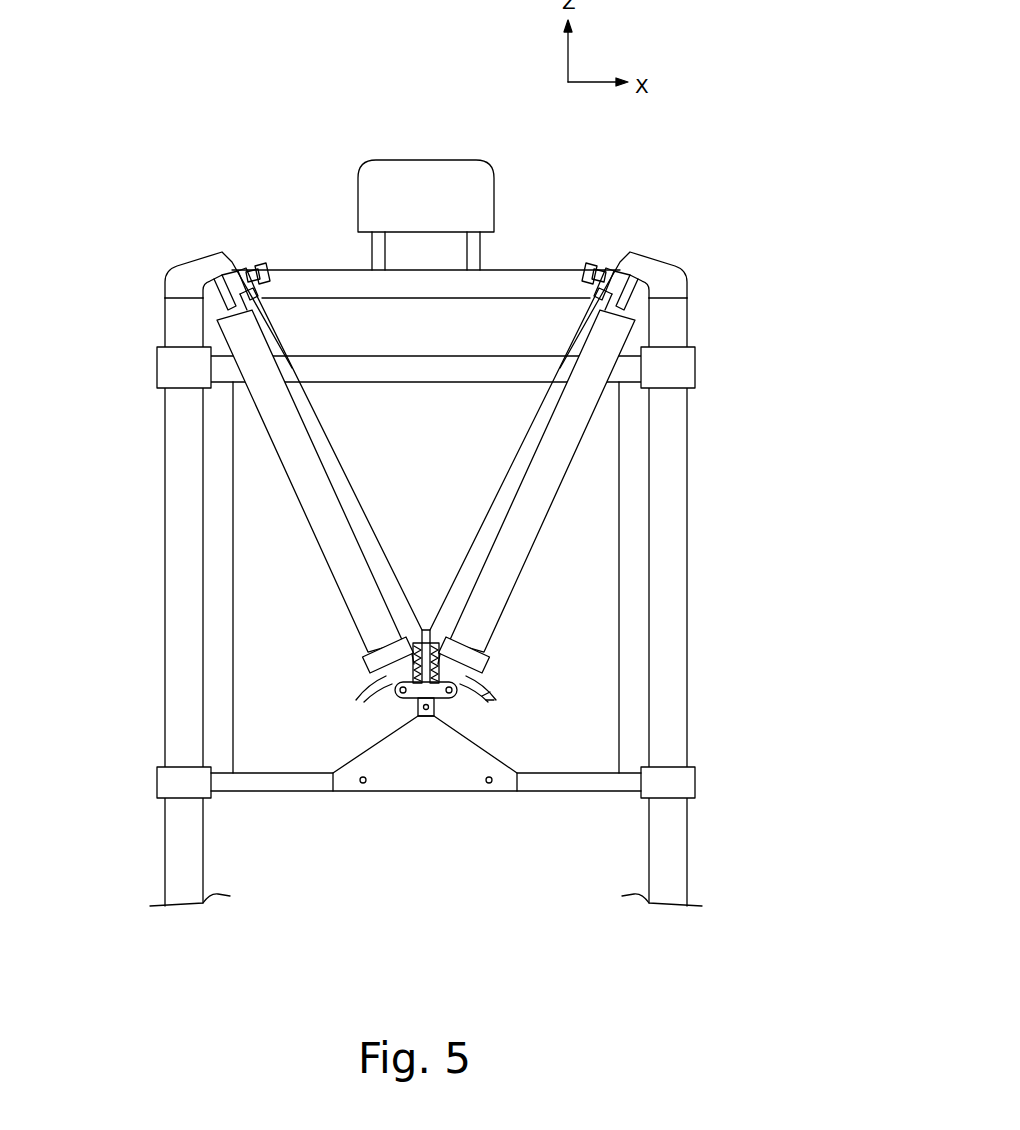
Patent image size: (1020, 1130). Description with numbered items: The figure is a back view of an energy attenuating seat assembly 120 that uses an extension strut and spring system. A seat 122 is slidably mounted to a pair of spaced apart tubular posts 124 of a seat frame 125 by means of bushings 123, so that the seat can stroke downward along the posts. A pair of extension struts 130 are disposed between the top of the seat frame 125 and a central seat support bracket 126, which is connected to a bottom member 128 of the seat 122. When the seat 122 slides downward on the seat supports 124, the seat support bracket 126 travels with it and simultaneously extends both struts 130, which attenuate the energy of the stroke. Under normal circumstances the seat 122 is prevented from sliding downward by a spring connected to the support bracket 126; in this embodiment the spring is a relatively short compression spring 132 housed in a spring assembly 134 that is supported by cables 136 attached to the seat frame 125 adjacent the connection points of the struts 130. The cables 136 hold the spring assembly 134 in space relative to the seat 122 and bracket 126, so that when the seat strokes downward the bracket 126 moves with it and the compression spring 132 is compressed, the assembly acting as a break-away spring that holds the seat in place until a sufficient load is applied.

The EA seat assembly 120 is at (205, 94).
The seat 122 is at (443, 355).
The bushings 123 is at (162, 372).
The tubular posts 124 is at (160, 610).
The seat frame 125 is at (566, 242).
The central seat support bracket 126 is at (425, 770).
The bottom member 128 is at (280, 792).
The extension struts 130 is at (340, 603).
The compression spring 132 is at (452, 666).
The spring assembly 134 is at (400, 650).
The cables 136 is at (345, 475).